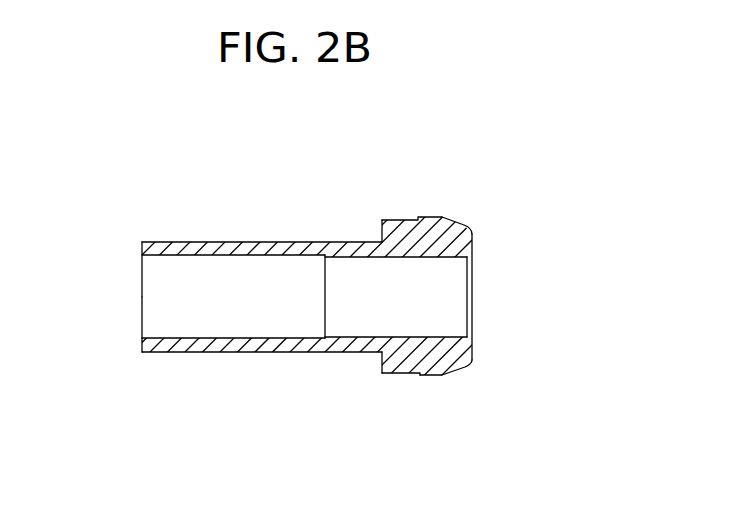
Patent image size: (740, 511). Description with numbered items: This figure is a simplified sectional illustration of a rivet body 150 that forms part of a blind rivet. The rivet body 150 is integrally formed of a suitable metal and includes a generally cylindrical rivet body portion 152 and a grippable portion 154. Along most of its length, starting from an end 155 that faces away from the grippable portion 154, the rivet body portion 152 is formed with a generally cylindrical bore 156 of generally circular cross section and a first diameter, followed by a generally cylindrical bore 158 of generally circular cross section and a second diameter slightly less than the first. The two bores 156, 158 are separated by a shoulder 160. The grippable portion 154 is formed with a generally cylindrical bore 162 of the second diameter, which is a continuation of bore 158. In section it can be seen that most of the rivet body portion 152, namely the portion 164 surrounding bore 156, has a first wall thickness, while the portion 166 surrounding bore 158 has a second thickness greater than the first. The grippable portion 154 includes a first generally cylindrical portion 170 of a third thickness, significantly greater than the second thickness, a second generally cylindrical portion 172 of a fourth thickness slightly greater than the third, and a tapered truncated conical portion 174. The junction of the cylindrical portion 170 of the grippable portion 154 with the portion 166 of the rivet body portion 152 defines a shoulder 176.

The rivet body 150 is at (160, 191).
The rivet body portion 152 is at (237, 353).
The grippable portion 154 is at (465, 235).
The end 155 is at (140, 348).
The generally cylindrical bore 156 is at (147, 288).
The generally cylindrical bore 158 is at (347, 311).
The shoulder 160 is at (312, 263).
The generally cylindrical bore 162 is at (450, 310).
The portion surrounding bore 156 164 is at (210, 242).
The portion surrounding bore 158 166 is at (357, 353).
The first generally cylindrical portion 170 is at (403, 370).
The second generally cylindrical portion 172 is at (428, 376).
The tapered truncated conical portion 174 is at (449, 226).
The shoulder 176 is at (383, 229).